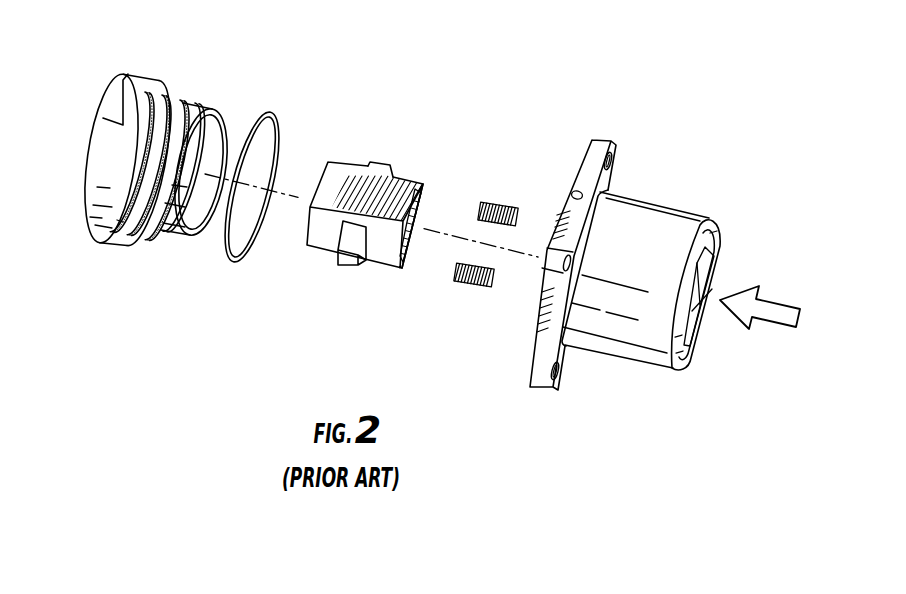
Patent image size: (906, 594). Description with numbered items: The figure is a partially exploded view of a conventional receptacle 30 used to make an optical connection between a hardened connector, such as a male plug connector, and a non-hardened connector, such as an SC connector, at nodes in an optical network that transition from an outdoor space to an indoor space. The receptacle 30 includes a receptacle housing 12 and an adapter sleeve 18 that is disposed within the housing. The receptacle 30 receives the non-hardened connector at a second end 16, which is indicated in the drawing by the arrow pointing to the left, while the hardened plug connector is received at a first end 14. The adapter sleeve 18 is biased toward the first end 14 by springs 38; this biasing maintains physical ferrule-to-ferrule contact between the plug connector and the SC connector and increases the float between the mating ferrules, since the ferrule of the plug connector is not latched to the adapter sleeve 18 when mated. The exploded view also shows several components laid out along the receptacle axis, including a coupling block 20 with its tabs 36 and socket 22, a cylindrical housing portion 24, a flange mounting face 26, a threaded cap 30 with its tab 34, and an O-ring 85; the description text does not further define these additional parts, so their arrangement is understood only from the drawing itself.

The receptacle housing 12 is at (617, 362).
The first end 14 is at (580, 157).
The second end 16 is at (722, 268).
The adapter sleeve 18 is at (404, 184).
The coupler block 20 is at (330, 170).
The hex socket 22 is at (404, 264).
The cylindrical housing 24 is at (647, 216).
The flange mounting face 26 is at (533, 338).
The receptacle 30 is at (88, 230).
The cap tab 34 is at (120, 102).
The coupler tabs 36 is at (380, 165).
The springs 38 is at (498, 203).
The O-ring 85 is at (233, 258).